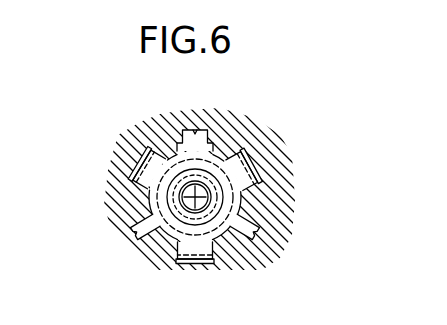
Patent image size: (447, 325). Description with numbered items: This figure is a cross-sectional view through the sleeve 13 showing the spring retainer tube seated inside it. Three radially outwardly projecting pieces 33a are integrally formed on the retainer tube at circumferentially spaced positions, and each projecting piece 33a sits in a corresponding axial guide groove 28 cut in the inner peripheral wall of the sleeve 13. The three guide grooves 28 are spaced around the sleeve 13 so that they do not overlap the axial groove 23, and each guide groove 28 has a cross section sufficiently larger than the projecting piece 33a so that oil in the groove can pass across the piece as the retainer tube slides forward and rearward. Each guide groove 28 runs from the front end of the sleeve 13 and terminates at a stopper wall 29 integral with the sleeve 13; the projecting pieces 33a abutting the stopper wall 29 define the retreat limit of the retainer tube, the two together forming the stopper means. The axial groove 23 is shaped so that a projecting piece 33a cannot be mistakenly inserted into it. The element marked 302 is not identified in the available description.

The sleeve 13 is at (153, 123).
The axial groove 23 is at (194, 129).
The axial guide groove 28 is at (146, 152).
The stopper wall 29 is at (128, 192).
The passage 302 is at (208, 145).
The projecting piece 33a is at (130, 162).